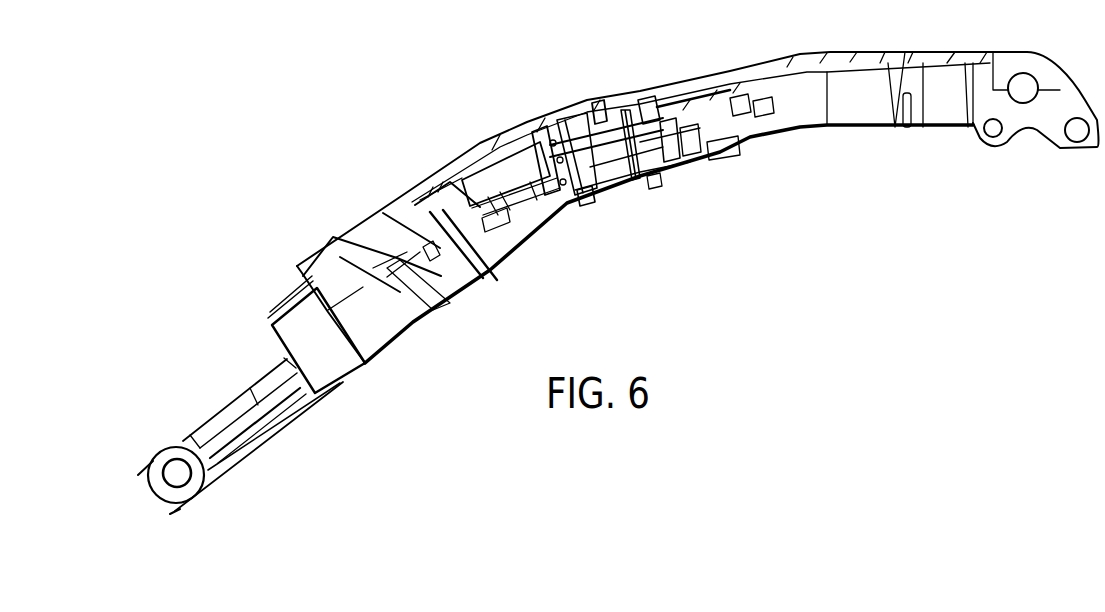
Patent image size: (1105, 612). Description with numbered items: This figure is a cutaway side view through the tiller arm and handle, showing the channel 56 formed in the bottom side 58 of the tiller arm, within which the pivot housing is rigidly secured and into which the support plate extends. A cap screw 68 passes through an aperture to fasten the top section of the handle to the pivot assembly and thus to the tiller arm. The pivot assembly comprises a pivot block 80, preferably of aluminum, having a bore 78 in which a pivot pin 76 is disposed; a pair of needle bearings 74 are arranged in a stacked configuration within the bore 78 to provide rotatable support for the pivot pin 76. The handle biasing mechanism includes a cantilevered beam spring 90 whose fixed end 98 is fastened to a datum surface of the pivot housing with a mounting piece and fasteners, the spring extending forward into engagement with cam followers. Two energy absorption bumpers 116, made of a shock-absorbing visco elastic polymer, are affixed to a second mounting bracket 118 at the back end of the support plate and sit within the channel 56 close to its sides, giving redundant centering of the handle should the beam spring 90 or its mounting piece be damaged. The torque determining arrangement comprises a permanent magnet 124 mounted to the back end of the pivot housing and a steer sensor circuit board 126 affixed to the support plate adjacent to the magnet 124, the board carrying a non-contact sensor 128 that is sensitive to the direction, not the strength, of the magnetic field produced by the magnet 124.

The channel 56 is at (804, 118).
The bottom side 58 is at (776, 141).
The cap screw 68 is at (594, 106).
The needle bearings 74 is at (622, 180).
The pivot pin 76 is at (604, 190).
The bore 78 is at (641, 142).
The pivot block 80 is at (640, 100).
The cantilevered beam spring 90 is at (480, 175).
The fixed end 98 is at (532, 132).
The energy absorption bumpers 116 is at (767, 103).
The second mounting bracket 118 is at (743, 108).
The permanent magnet 124 is at (675, 170).
The steer sensor circuit board 126 is at (729, 150).
The non-contact sensor 128 is at (697, 160).